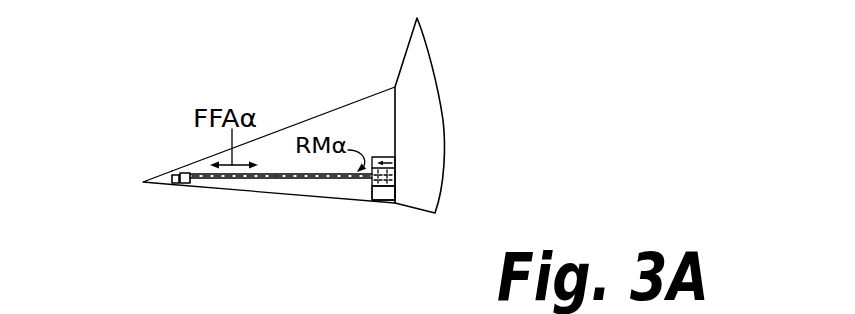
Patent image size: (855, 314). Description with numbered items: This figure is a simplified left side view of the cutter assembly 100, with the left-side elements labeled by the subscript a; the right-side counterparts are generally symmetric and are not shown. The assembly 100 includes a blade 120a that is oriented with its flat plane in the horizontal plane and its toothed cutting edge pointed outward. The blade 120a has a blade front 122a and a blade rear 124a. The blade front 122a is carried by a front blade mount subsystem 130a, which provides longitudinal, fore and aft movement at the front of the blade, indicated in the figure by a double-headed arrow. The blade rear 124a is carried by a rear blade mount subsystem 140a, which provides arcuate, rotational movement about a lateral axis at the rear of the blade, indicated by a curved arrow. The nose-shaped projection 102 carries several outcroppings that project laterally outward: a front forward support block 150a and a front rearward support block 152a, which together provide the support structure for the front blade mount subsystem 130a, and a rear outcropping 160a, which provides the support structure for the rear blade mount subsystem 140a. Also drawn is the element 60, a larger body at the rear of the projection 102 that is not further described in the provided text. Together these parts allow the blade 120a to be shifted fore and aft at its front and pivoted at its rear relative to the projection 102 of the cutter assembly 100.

The cutter assembly 100 is at (260, 120).
The projection 102 is at (282, 130).
The transducer horn / body 60 is at (433, 104).
The front blade mount subsystem 130a is at (168, 194).
The front forward support block 150a is at (173, 174).
The front rearward support block 152a is at (186, 172).
The blade 120a is at (248, 179).
The blade front 122a is at (202, 179).
The blade rear 124a is at (352, 179).
The rear blade mount subsystem 140a is at (394, 211).
The rear outcropping 160a is at (378, 201).